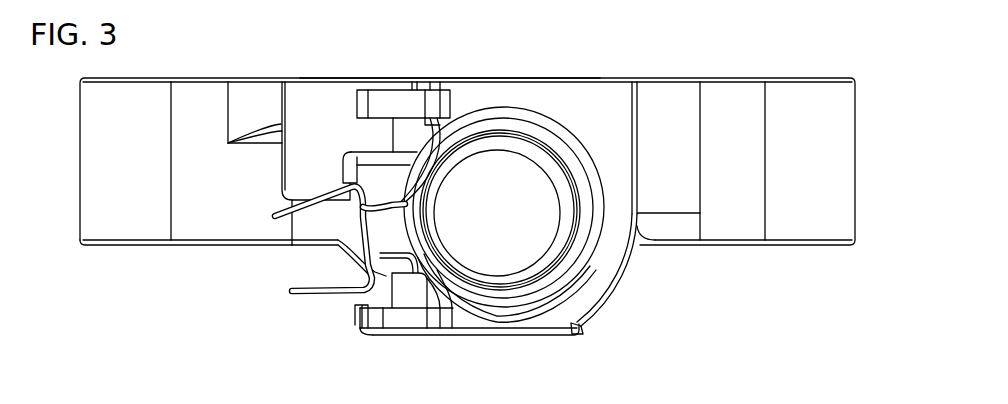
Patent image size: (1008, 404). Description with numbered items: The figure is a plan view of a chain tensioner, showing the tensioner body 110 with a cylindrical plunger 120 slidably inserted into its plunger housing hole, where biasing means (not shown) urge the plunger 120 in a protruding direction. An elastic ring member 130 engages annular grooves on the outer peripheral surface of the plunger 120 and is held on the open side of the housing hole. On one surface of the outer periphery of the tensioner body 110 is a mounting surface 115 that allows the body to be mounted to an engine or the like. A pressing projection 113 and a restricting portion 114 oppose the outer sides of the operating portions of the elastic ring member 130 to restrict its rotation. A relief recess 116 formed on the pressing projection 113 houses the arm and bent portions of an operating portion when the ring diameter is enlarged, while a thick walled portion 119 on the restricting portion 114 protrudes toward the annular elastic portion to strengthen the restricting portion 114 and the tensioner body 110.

The tensioner body 110 is at (600, 308).
The pressing projection 113 is at (302, 185).
The restricting portion 114 is at (357, 330).
The mounting surface 115 is at (455, 80).
The relief recess 116 is at (367, 166).
The thick walled portion 119 is at (413, 288).
The plunger 120 is at (515, 215).
The elastic ring member 130 is at (287, 296).